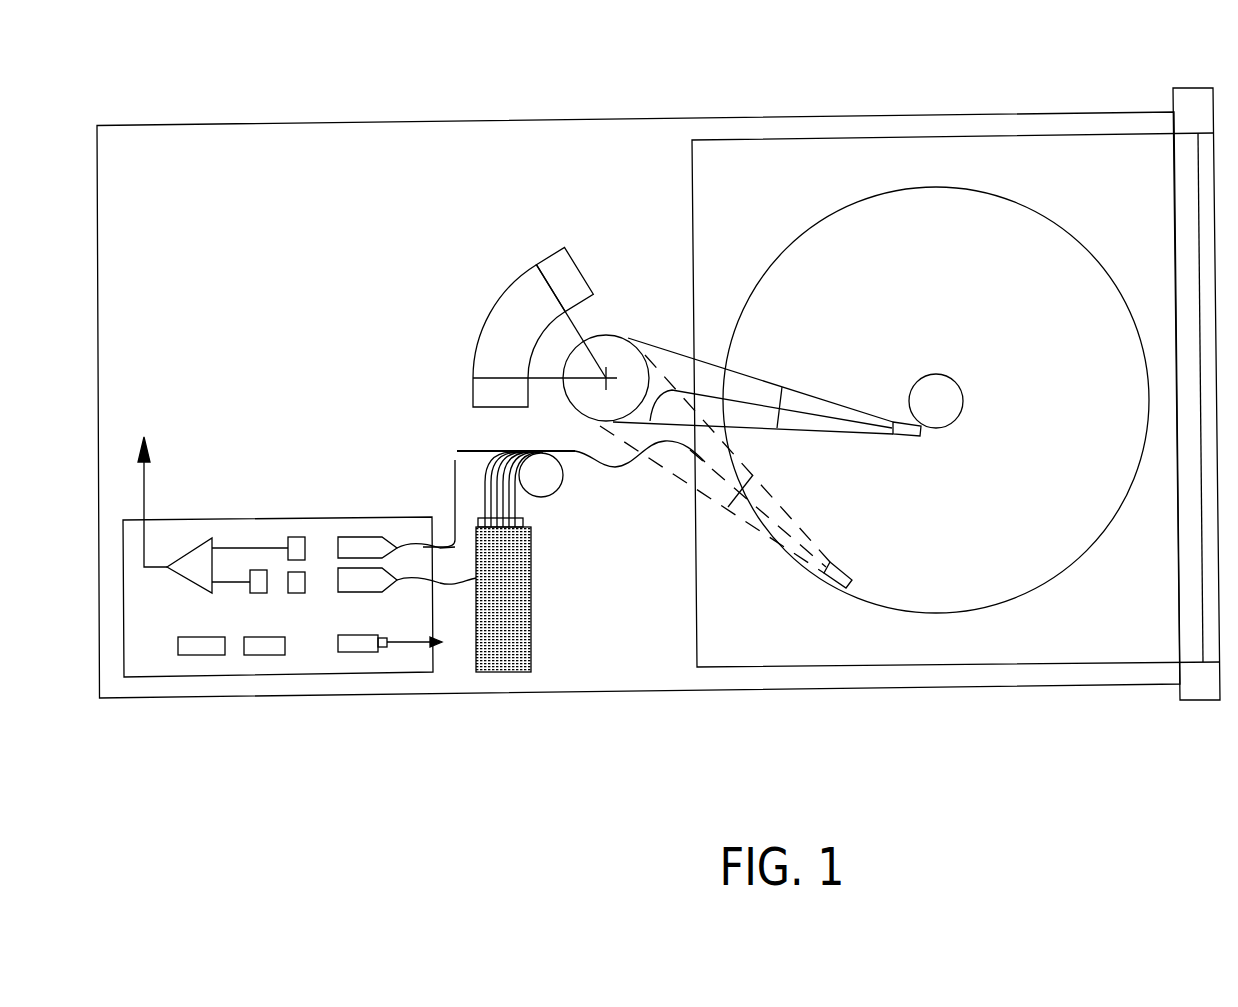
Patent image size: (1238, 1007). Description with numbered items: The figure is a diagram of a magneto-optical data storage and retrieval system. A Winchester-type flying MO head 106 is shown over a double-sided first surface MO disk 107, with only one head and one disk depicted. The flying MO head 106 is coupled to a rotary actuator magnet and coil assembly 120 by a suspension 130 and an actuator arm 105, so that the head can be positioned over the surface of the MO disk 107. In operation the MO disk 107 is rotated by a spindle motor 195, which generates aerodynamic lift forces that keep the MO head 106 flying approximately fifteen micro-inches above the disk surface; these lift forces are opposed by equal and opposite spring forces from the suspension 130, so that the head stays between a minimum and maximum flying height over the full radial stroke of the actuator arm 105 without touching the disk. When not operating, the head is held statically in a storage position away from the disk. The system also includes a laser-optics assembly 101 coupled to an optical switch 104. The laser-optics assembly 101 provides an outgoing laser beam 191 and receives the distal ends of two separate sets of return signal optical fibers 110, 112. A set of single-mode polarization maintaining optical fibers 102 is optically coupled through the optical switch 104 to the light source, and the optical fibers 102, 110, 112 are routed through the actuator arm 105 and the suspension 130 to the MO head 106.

The laser-optics assembly 101 is at (230, 662).
The single-mode PM optical fibers 102 is at (455, 460).
The optical switch 104 is at (533, 586).
The actuator arm 105 is at (743, 390).
The flying MO head 106 is at (908, 436).
The MO disk 107 is at (947, 187).
The return signal optical fibers 110 is at (488, 452).
The return signal optical fibers 112 is at (422, 547).
The rotary actuator magnet and coil assembly 120 is at (531, 283).
The suspension 130 is at (802, 402).
The outgoing laser beam 191 is at (400, 645).
The spindle motor 195 is at (938, 395).